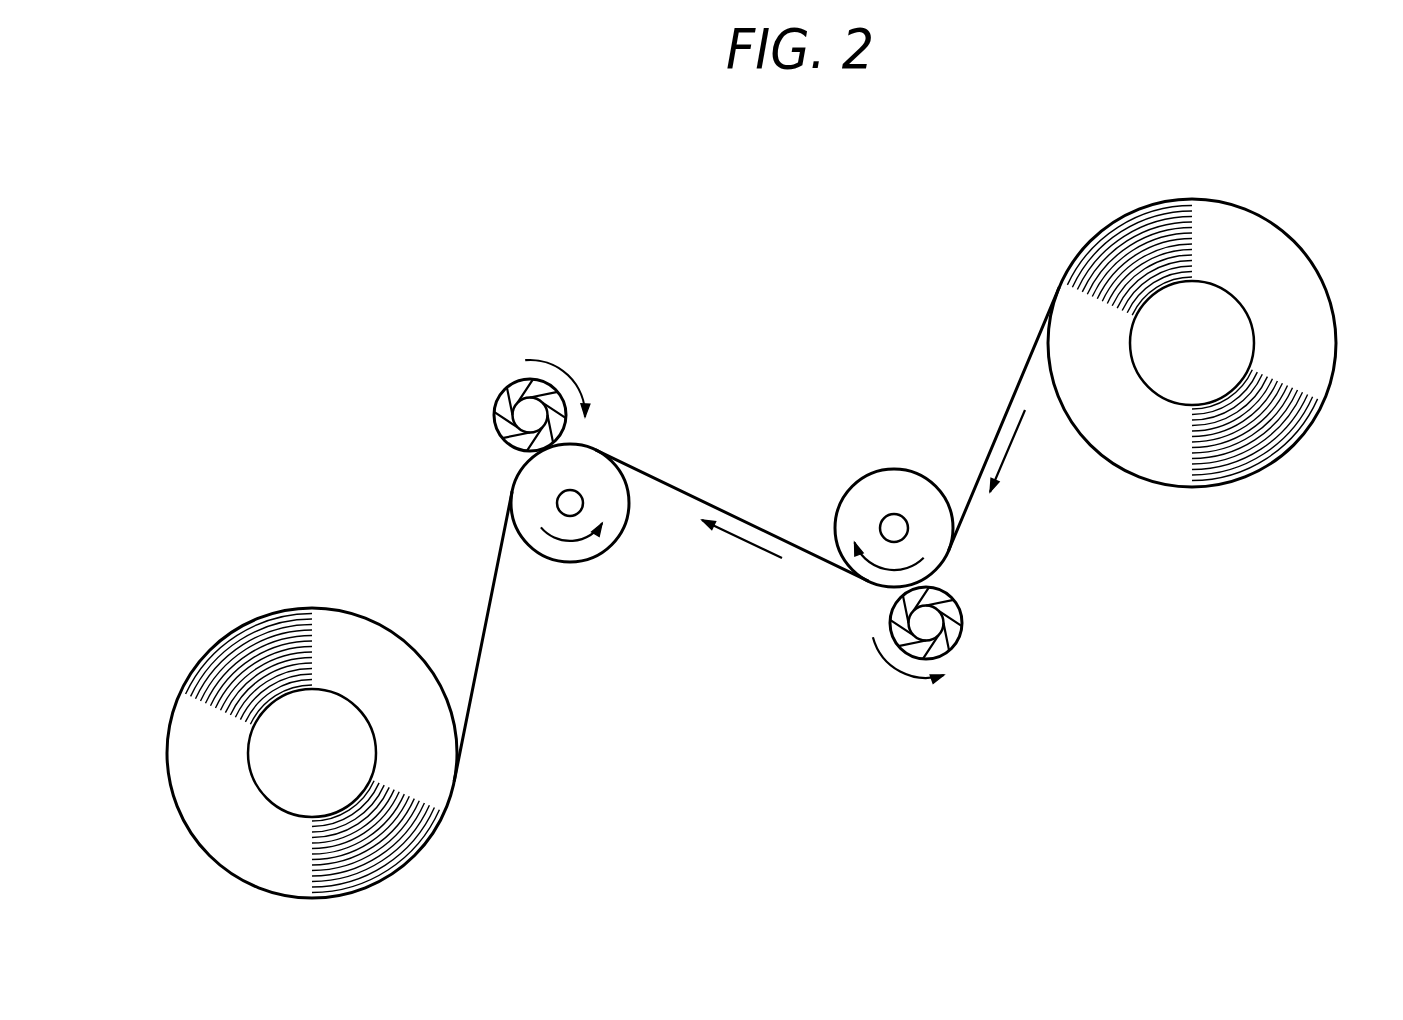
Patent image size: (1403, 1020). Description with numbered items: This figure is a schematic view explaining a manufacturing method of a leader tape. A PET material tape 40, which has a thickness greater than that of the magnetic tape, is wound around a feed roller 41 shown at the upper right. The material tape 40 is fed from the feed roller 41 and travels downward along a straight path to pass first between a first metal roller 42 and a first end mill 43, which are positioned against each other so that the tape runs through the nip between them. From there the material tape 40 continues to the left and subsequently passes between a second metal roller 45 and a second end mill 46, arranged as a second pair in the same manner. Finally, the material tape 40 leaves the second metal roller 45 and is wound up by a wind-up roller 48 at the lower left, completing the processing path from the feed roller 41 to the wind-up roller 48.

The PET material tape 40 is at (1018, 379).
The feed roller 41 is at (1158, 368).
The first metal roller 42 is at (848, 483).
The first end mill 43 is at (958, 650).
The second metal roller 45 is at (588, 550).
The second end mill 46 is at (512, 382).
The wind-up roller 48 is at (318, 700).